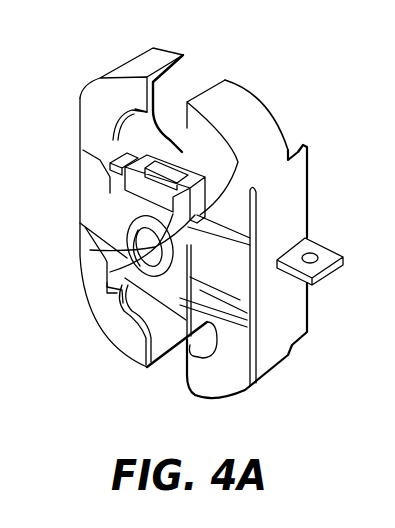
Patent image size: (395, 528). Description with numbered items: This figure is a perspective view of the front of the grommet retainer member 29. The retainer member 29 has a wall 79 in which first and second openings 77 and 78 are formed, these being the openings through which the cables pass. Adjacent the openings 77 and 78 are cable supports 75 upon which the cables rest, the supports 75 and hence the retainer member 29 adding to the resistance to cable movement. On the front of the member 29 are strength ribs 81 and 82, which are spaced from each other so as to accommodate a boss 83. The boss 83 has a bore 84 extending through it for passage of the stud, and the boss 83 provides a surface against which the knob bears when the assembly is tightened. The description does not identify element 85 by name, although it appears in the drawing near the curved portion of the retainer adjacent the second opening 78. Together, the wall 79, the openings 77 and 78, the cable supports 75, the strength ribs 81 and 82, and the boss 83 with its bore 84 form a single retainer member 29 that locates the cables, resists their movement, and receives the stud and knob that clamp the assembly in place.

The grommet retainer member 29 is at (108, 72).
The wall 79 is at (96, 113).
The second opening 78 is at (163, 127).
The cylindrical portion 85 is at (238, 165).
The strength rib 81 is at (108, 172).
The cable supports 75 is at (115, 194).
The strength rib 82 is at (90, 250).
The bore 84 is at (110, 272).
The boss 83 is at (165, 263).
The first opening 77 is at (205, 330).